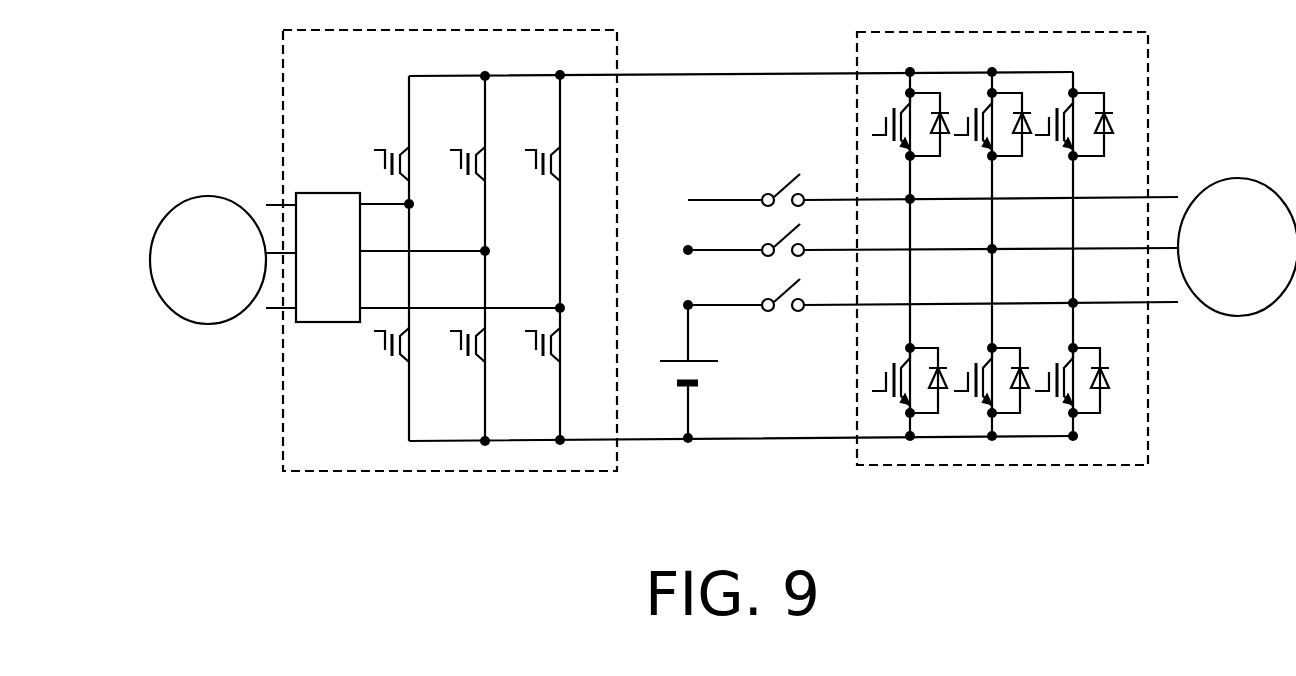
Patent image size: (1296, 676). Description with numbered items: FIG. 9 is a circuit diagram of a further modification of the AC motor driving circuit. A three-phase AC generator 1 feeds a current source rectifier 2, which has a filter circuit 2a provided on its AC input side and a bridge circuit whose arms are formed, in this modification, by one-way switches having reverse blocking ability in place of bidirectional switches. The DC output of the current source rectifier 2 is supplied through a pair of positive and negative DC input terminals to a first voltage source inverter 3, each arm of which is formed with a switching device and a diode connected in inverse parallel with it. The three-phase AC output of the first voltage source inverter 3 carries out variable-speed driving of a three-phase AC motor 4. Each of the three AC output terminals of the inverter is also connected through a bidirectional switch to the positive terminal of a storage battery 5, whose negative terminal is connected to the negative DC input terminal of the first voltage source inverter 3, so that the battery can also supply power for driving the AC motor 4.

The three-phase AC generator 1 is at (208, 260).
The current source rectifier 2 is at (450, 250).
The filter circuit 2a is at (328, 257).
The first voltage source inverter 3 is at (1002, 248).
The three-phase AC motor 4 is at (1237, 247).
The storage battery 5 is at (698, 371).